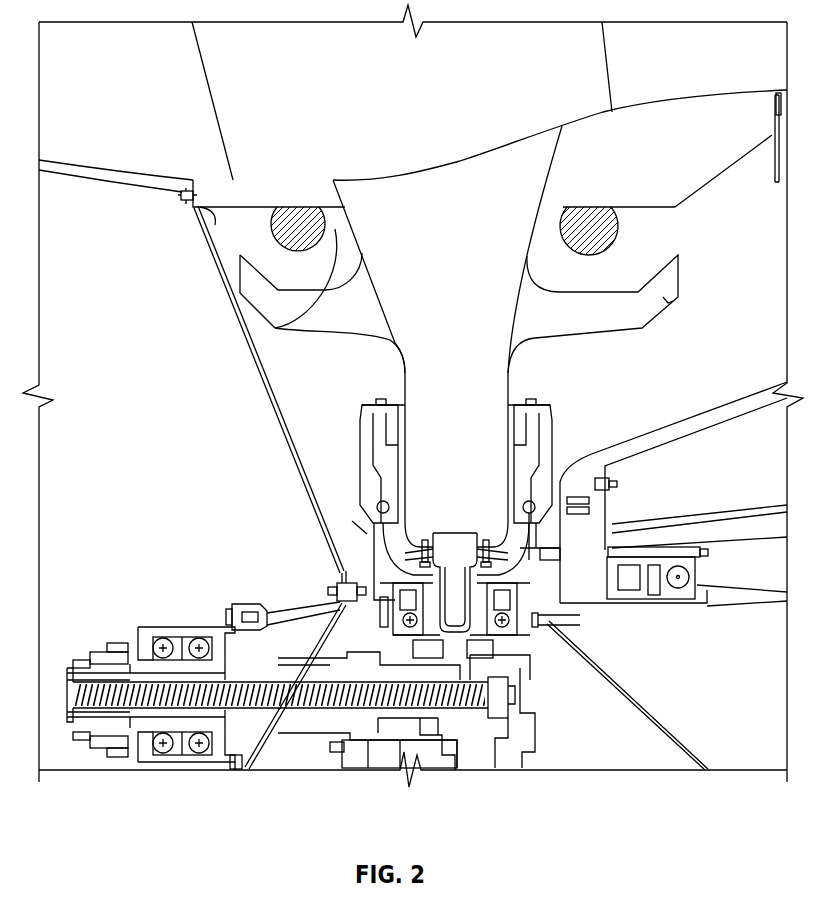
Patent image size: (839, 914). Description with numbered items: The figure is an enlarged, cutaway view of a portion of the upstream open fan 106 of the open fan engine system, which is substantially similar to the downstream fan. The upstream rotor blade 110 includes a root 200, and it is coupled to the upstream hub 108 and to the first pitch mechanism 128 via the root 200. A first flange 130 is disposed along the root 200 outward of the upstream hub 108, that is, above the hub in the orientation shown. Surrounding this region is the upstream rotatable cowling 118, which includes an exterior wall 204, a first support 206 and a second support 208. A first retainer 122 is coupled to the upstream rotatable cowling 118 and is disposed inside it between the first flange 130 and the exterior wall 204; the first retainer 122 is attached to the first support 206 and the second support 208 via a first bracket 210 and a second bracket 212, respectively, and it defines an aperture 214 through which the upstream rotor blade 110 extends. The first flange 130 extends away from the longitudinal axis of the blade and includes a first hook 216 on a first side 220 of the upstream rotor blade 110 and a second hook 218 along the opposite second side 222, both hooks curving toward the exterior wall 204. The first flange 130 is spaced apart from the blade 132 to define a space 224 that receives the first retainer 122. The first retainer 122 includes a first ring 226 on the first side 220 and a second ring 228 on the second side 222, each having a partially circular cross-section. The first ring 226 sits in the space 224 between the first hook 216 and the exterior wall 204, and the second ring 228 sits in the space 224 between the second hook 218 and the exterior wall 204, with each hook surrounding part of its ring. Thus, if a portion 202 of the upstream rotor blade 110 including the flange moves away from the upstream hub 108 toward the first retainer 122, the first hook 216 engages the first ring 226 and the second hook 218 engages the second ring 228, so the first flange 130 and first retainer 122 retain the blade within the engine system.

The upstream open fan 106 is at (126, 112).
The upstream hub 108 is at (362, 468).
The upstream rotor blade 110 is at (212, 50).
The upstream rotatable cowling 118 is at (360, 179).
The first retainer 122 is at (589, 206).
The first pitch mechanism 128 is at (463, 657).
The first flange 130 is at (322, 327).
The blade 132 is at (458, 70).
The root 200 is at (448, 292).
The portion 202 is at (513, 385).
The exterior wall 204 is at (698, 96).
The first support 206 is at (248, 360).
The second support 208 is at (772, 172).
The first bracket 210 is at (217, 211).
The second bracket 212 is at (657, 206).
The aperture 214 is at (255, 330).
The first hook 216 is at (248, 277).
The second hook 218 is at (668, 302).
The first side 220 is at (403, 375).
The second side 222 is at (512, 375).
The space 224 is at (252, 197).
The first ring 226 is at (272, 227).
The second ring 228 is at (605, 223).